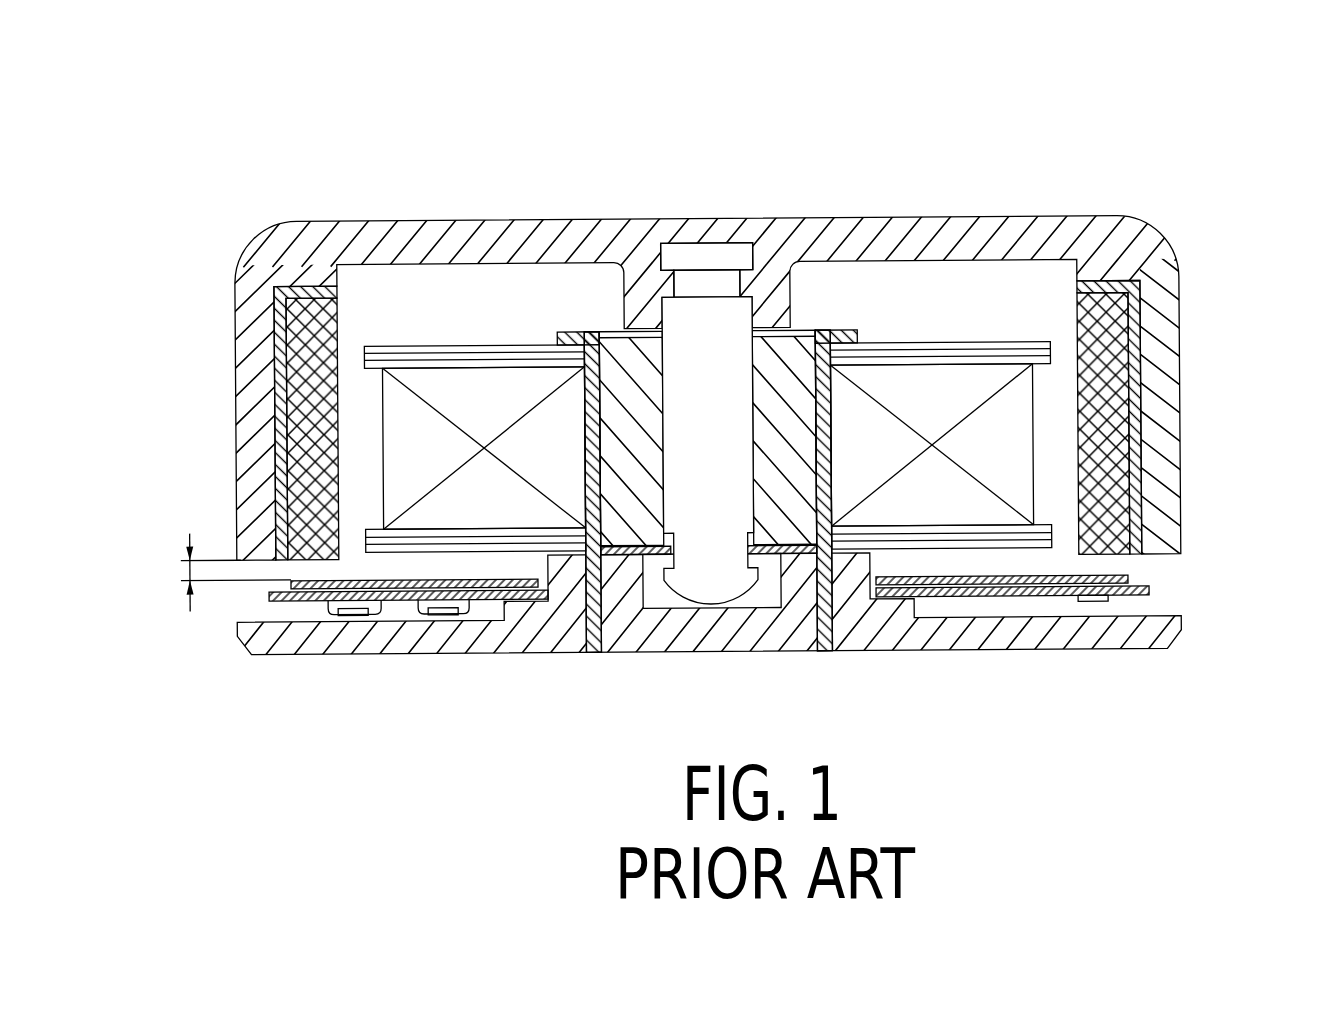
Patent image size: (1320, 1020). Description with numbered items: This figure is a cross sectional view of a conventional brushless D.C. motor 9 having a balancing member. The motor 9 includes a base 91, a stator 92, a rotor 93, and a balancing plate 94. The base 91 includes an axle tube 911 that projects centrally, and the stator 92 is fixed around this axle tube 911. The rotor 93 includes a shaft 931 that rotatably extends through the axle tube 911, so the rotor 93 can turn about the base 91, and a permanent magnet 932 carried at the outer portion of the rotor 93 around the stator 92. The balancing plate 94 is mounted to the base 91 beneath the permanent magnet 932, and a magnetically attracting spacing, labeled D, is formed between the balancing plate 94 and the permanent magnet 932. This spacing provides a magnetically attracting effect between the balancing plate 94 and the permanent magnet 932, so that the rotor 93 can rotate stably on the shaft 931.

The motor 9 is at (1142, 182).
The base 91 is at (1168, 627).
The axle tube 911 is at (583, 490).
The stator 92 is at (1018, 425).
The rotor 93 is at (871, 219).
The shaft 931 is at (690, 328).
The permanent magnet 932 is at (306, 392).
The balancing plate 94 is at (1133, 572).